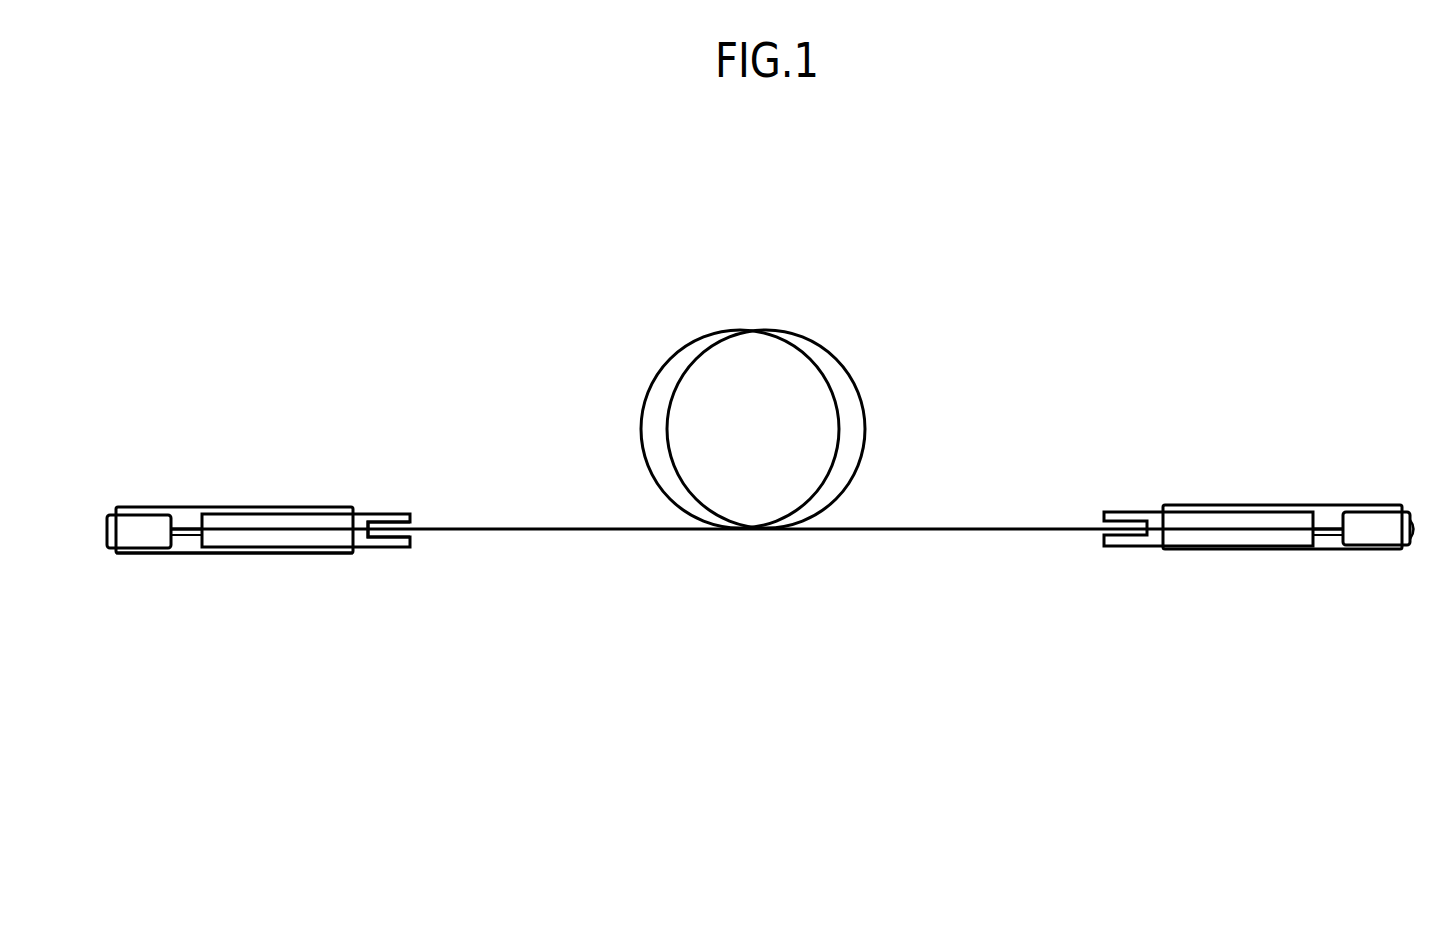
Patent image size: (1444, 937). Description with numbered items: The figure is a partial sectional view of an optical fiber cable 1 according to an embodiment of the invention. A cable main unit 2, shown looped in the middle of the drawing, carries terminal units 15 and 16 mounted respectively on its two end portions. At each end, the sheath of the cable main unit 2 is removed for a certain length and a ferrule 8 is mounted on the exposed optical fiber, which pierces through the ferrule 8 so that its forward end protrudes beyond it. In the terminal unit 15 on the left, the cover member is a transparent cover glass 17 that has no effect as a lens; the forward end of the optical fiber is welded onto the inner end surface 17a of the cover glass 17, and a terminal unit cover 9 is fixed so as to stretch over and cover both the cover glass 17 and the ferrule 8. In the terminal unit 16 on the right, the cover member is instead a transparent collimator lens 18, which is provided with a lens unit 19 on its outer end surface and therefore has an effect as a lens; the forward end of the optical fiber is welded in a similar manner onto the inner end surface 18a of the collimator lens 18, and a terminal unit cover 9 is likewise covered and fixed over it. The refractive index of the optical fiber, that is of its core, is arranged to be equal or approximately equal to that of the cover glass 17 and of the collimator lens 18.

The optical fiber coil 1 is at (878, 355).
The cable main unit 2 is at (508, 527).
The ferrule 8 is at (367, 512).
The terminal unit cover 9 is at (272, 554).
The terminal unit 15 is at (274, 492).
The terminal unit 16 is at (1250, 502).
The cover glass 17 is at (125, 541).
The inner end surface 17a is at (177, 542).
The collimator lens 18 is at (1373, 536).
The inner end surface 18a is at (1343, 541).
The lens unit 19 is at (1413, 531).